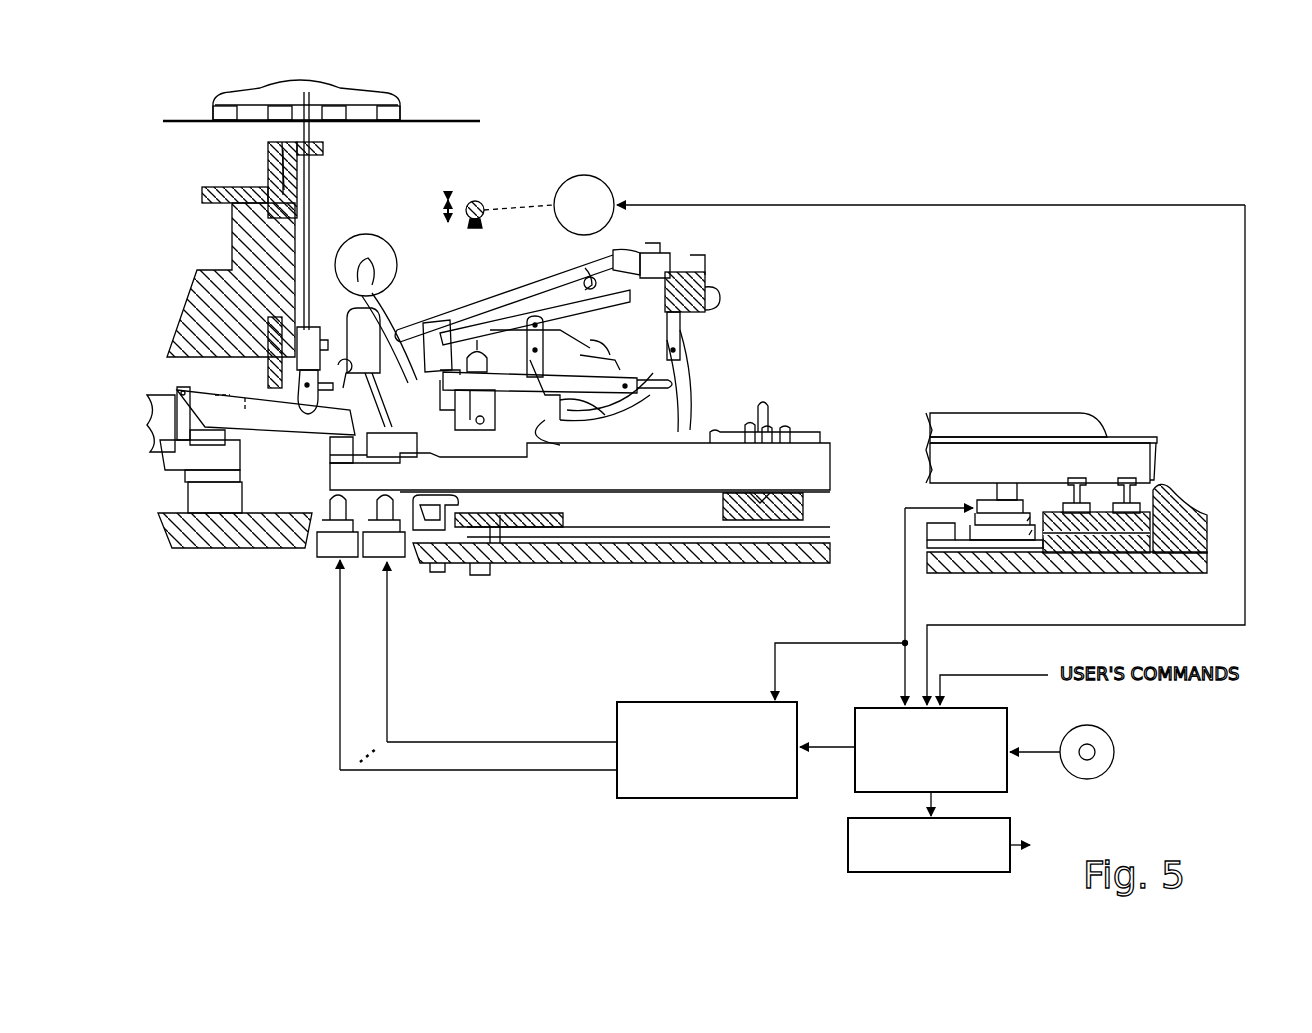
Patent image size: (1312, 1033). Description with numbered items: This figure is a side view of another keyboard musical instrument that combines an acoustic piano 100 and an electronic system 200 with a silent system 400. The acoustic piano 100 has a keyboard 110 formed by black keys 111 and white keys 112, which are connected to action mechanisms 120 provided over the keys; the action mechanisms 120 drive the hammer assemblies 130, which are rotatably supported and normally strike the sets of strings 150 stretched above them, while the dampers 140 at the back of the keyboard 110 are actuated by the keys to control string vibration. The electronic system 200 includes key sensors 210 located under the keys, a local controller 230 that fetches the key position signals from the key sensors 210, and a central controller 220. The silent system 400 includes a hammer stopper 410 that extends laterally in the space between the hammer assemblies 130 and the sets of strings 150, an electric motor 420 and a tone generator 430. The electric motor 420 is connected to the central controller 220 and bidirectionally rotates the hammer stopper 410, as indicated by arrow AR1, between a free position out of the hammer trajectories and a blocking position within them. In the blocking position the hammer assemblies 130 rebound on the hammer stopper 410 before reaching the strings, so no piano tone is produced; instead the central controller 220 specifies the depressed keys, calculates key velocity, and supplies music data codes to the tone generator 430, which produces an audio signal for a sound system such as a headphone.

The acoustic piano 100 is at (1037, 498).
The keyboard 110 is at (1046, 413).
The black keys 111 is at (1018, 425).
The white keys 112 is at (1135, 437).
The action mechanisms 120 is at (648, 407).
The hammer assemblies 130 is at (380, 242).
The dampers 140 is at (380, 88).
The sets of strings 150 is at (458, 120).
The electronic system 200 is at (285, 770).
The key sensors 210 is at (957, 498).
The central controller 220 is at (855, 718).
The local controller 230 is at (705, 701).
The silent system 400 is at (531, 169).
The hammer stopper 410 is at (478, 200).
The electric motor 420 is at (605, 183).
The tone generator 430 is at (850, 833).
The arrow indicating bidirectional rotation AR1 is at (448, 200).